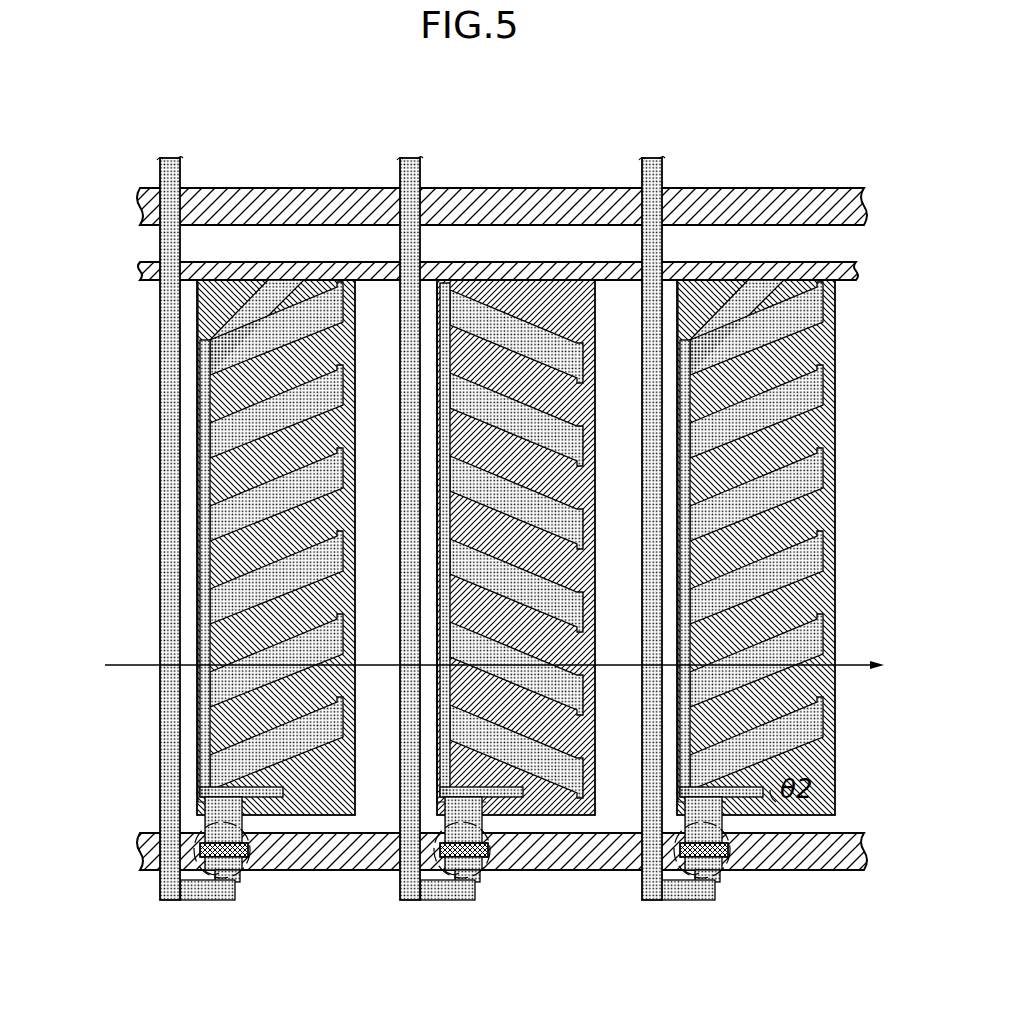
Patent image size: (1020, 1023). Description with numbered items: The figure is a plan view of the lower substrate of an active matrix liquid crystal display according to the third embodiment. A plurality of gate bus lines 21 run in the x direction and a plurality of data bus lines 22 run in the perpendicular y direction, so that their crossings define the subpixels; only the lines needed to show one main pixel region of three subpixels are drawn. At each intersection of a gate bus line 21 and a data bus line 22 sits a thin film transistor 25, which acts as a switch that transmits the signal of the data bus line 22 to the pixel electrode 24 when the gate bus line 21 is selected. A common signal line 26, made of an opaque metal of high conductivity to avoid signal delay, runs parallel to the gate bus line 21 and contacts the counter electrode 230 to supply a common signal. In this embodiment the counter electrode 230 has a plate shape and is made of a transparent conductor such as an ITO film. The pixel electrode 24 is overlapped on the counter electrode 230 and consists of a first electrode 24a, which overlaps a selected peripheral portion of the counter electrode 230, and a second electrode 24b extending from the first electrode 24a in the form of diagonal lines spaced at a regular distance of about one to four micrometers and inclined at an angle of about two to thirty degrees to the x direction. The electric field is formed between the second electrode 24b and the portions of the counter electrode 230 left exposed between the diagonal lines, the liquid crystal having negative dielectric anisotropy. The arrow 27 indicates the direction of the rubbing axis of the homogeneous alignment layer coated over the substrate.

The gate bus line 21 is at (138, 208).
The data bus line 22 is at (173, 899).
The pixel electrode 24 is at (431, 541).
The first electrode 24a is at (198, 494).
The second electrode 24b is at (222, 513).
The thin film transistor 25 is at (246, 880).
The common signal line 26 is at (138, 275).
The direction of rubbing axis 27 is at (522, 662).
The counter electrode 230 is at (205, 315).